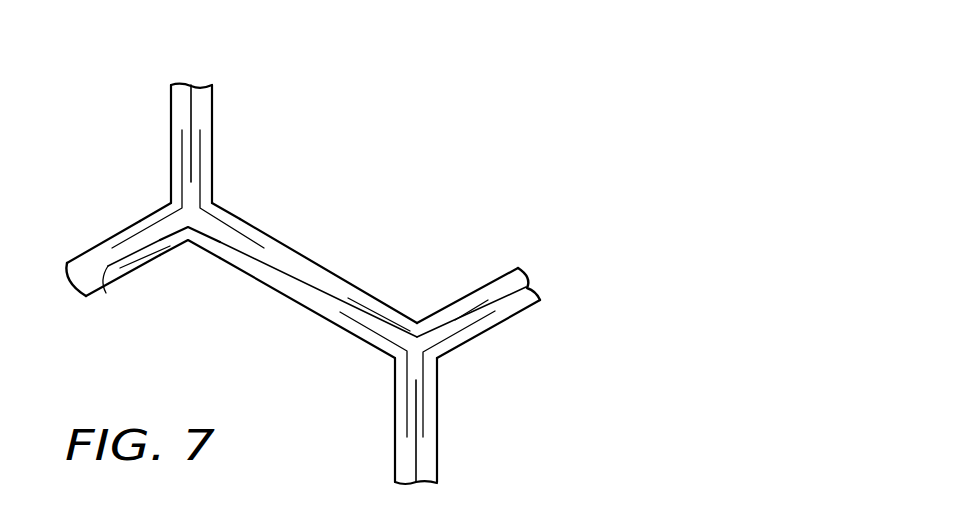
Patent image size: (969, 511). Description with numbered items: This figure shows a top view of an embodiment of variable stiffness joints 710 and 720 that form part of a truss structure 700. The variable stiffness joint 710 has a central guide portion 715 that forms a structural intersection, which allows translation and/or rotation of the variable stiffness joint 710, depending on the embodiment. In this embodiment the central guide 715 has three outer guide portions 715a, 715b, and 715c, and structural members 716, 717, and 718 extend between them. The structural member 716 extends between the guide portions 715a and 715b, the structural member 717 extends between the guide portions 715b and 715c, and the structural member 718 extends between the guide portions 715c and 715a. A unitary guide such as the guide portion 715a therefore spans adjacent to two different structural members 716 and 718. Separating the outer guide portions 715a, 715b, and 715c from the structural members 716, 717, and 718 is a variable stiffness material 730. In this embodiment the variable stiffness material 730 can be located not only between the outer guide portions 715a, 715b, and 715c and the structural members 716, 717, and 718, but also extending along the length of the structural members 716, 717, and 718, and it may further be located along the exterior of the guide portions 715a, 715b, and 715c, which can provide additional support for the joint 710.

The truss structure 700 is at (425, 163).
The variable stiffness joint 710 is at (221, 200).
The central guide portion 715 is at (178, 205).
The outer guide portion 715a is at (182, 143).
The outer guide portion 715b is at (201, 144).
The outer guide portion 715c is at (171, 247).
The structural member 716 is at (193, 95).
The structural member 717 is at (327, 289).
The structural member 718 is at (106, 295).
The variable stiffness joint 720 is at (455, 366).
The variable stiffness material 730 is at (131, 240).